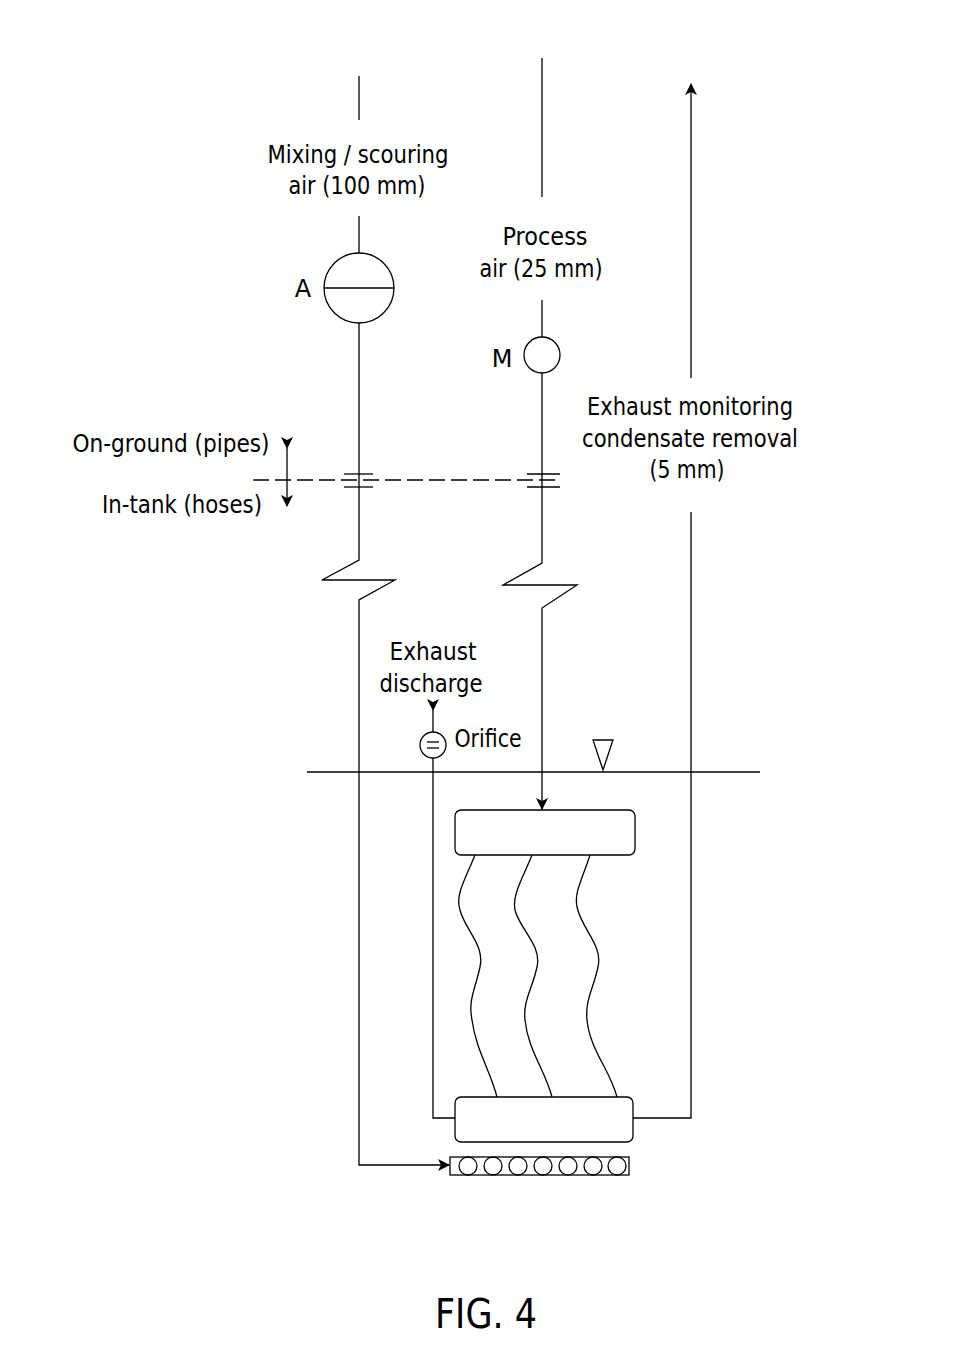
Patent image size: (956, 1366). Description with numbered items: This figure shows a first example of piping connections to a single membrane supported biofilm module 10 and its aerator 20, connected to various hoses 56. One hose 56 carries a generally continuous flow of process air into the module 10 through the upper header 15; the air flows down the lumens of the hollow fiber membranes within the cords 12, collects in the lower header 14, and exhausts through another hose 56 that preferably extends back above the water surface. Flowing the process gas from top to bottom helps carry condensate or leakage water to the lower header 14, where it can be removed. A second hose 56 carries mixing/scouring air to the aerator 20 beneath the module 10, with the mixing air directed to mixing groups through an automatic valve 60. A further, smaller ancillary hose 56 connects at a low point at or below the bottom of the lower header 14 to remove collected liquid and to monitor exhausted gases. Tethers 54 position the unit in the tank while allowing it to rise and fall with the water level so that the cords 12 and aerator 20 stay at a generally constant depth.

The module 10 is at (234, 56).
The automatic valve 60 is at (332, 254).
The hose 56 is at (693, 588).
The tether 54 is at (432, 985).
The upper header 15 is at (636, 821).
The cord 12 is at (598, 956).
The lower header 14 is at (638, 1133).
The aerator 20 is at (568, 1178).